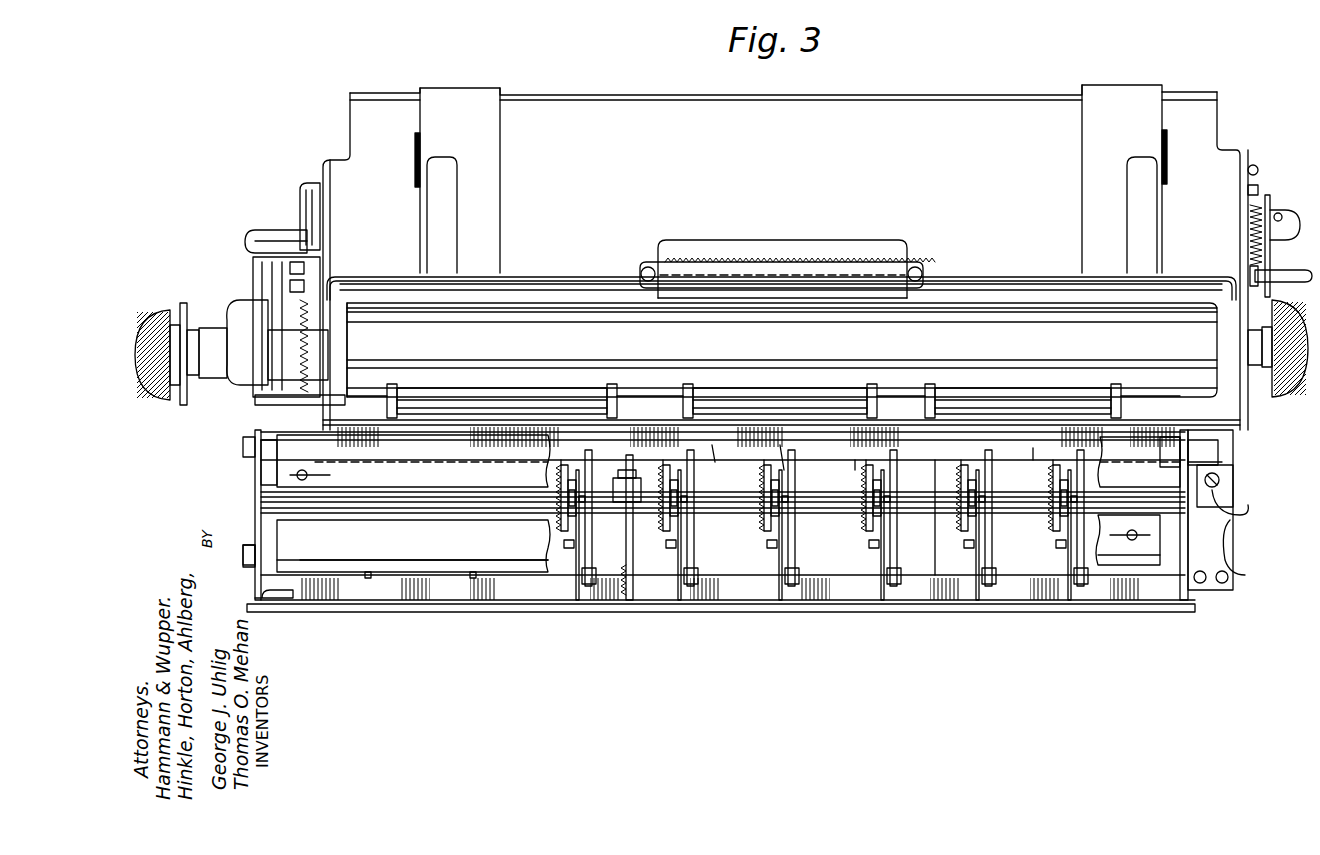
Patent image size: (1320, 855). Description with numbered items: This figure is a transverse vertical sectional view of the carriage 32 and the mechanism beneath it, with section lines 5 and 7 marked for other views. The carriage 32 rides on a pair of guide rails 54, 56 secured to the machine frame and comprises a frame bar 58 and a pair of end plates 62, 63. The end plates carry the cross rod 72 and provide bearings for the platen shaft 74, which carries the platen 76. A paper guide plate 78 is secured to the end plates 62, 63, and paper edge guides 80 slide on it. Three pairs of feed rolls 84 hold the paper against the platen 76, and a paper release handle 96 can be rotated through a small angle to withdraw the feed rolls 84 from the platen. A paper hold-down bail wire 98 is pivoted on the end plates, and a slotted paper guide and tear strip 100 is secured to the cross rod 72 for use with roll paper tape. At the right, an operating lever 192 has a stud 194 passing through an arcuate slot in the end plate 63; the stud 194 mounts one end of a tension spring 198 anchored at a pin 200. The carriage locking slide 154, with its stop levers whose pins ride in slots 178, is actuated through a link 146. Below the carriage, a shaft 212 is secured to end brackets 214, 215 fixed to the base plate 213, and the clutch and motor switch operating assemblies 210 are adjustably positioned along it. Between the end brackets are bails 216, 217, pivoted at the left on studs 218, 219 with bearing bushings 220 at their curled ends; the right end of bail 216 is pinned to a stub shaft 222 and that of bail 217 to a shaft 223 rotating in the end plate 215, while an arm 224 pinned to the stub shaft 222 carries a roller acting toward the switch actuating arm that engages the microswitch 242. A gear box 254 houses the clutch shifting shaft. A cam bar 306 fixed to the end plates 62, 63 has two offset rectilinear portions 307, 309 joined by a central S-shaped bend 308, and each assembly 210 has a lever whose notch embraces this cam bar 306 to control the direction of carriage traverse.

The section line 5- 5 is at (1302, 33).
The section line 7- 7 is at (1088, 428).
The carriage 32 is at (296, 188).
The guide rail 54 is at (268, 230).
The guide rail 56 is at (268, 410).
The frame bar 58 is at (265, 285).
The end plate 62 is at (323, 160).
The end plate 63 is at (1245, 156).
The cross rod 72 is at (556, 285).
The platen shaft 74 is at (1250, 344).
The platen 76 is at (1005, 305).
The paper guide plate 78 is at (350, 101).
The paper edge guide 80 is at (448, 205).
The feed roll 84 is at (518, 395).
The paper release handle 96 is at (1290, 215).
The paper hold-down bail wire 98 is at (960, 277).
The slotted paper guide and tear strip 100 is at (745, 258).
The link 146 is at (633, 585).
The carriage locking slide 154 is at (627, 484).
The slot 178 is at (633, 555).
The operating lever 192 is at (1283, 341).
The stud 194 is at (1245, 270).
The tension spring 198 is at (1248, 224).
The pin 200 is at (1247, 190).
The clutch and motor switch operating assembly 210 is at (768, 540).
The shaft 212 is at (845, 505).
The base plate 213 is at (470, 605).
The end bracket 214 is at (255, 600).
The end bracket 215 is at (1200, 600).
The bail 216 is at (280, 477).
The bail 217 is at (398, 563).
The stud 218 is at (245, 440).
The stud 219 is at (255, 548).
The bearing bushing 220 is at (275, 447).
The stub shaft 222 is at (1225, 443).
The shaft 223 is at (1165, 540).
The arm 224 is at (1222, 462).
The microswitch 242 is at (1245, 508).
The gear box 254 is at (935, 552).
The cam bar 306 is at (855, 460).
The rectilinear portion 307 is at (712, 445).
The S-shaped bend 308 is at (780, 447).
The rectilinear portion 309 is at (1033, 448).